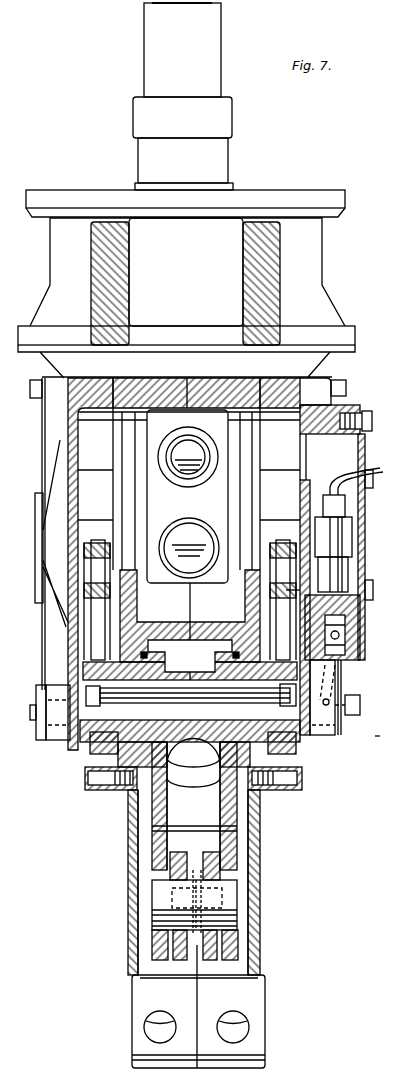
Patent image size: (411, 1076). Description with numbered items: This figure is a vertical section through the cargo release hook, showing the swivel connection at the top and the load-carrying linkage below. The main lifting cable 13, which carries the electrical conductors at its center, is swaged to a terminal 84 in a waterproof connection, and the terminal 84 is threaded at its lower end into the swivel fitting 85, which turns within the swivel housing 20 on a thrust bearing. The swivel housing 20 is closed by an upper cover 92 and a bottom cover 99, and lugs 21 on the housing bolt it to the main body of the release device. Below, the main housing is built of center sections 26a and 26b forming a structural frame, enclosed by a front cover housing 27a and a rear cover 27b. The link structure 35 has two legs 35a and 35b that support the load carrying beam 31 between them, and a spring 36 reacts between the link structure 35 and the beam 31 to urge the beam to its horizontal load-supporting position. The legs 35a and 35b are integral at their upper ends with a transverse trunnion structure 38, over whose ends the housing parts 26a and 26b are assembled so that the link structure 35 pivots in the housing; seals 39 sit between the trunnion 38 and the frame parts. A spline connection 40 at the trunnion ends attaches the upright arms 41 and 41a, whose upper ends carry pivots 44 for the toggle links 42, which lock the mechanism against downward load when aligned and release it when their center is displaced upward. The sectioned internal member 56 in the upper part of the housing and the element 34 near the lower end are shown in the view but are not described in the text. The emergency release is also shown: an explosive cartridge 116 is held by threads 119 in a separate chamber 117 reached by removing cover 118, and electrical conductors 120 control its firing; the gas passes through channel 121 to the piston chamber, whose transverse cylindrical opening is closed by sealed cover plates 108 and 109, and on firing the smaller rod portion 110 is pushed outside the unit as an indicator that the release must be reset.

The main lifting cable 13 is at (152, 4).
The terminal 84 is at (144, 58).
The swivel fitting 85 is at (222, 162).
The upper cover 92 is at (303, 192).
The swivel housing 20 is at (322, 238).
The lug 21 is at (122, 272).
The bottom cover 99 is at (356, 346).
The front cover housing 27a is at (72, 398).
The rear cover 27b is at (326, 380).
The separate chamber 117 is at (340, 420).
The cover 118 is at (366, 458).
The electrical conductors 120 is at (365, 475).
The explosive cartridge 116 is at (352, 526).
The threads 119 is at (342, 608).
The channel 121 is at (338, 685).
The cover plate 108 is at (343, 698).
The smaller rod portion 110 is at (393, 724).
The cylinder 56 is at (176, 500).
The pivot 44 is at (88, 546).
The toggle link 42 is at (97, 540).
The upright arm 41 is at (85, 605).
The rear upright arm 41a is at (292, 594).
The seal 39 is at (225, 655).
The cover plate 109 is at (40, 683).
The spline connection 40 is at (95, 737).
The transverse trunnion structure 38 is at (290, 787).
The center housing section 26a is at (145, 385).
The center housing section 26b is at (237, 387).
The link structure 35 is at (142, 857).
The link leg 35a is at (152, 807).
The link leg 35b is at (237, 815).
The spring 36 is at (220, 870).
The valve 34 is at (232, 897).
The load carrying beam 31 is at (210, 958).